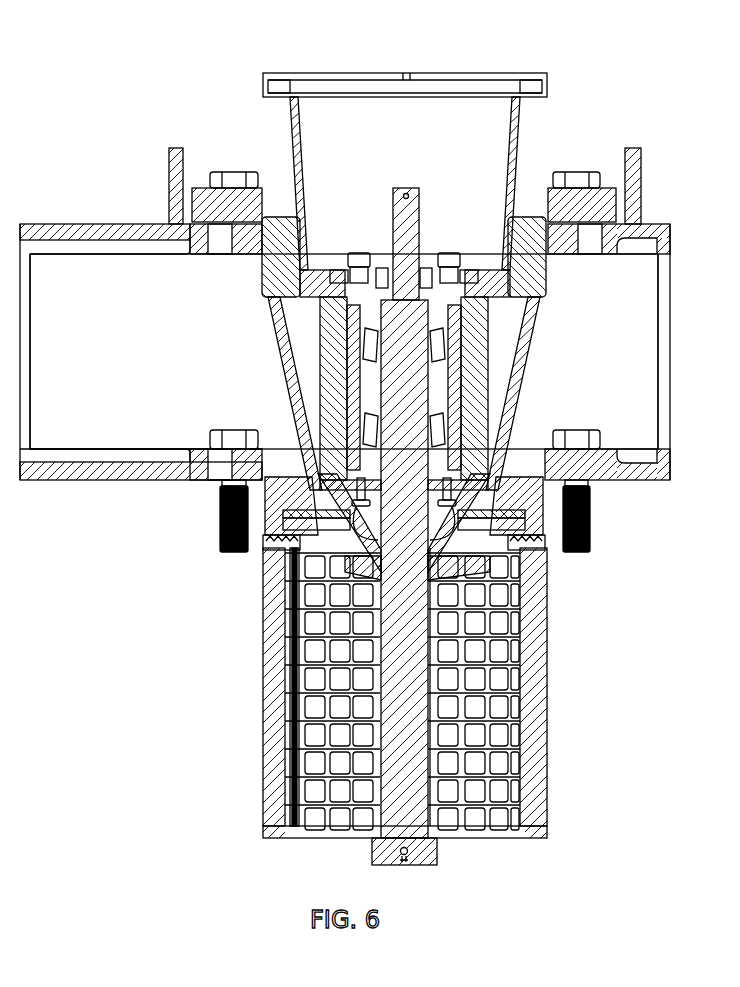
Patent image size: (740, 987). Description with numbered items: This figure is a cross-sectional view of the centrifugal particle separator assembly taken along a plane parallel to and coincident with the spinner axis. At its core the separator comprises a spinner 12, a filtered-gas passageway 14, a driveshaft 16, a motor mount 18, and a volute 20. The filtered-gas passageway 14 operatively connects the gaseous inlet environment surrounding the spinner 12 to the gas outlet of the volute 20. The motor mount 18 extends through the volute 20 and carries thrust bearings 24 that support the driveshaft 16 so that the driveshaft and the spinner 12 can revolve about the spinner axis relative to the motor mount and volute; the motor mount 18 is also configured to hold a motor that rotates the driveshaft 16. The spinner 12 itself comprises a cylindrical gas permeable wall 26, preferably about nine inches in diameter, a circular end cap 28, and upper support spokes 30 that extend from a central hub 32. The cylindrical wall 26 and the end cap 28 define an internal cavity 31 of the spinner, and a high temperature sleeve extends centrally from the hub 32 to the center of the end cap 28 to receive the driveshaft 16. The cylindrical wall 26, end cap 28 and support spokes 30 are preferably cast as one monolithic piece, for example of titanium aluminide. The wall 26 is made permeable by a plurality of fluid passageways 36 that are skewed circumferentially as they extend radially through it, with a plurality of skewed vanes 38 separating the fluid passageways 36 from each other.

The spinner 12 is at (178, 53).
The filtered-gas passageway 14 is at (167, 378).
The driveshaft 16 is at (388, 839).
The motor mount 18 is at (430, 82).
The volute 20 is at (620, 336).
The thrust bearings 24 is at (447, 345).
The cylindrical gas permeable wall 26 is at (270, 727).
The circular end cap 28 is at (438, 840).
The upper support spokes 30 is at (455, 573).
The internal cavity 31 is at (490, 688).
The central hub 32 is at (355, 590).
The fluid passageways 36 is at (478, 760).
The skewed vanes 38 is at (300, 782).